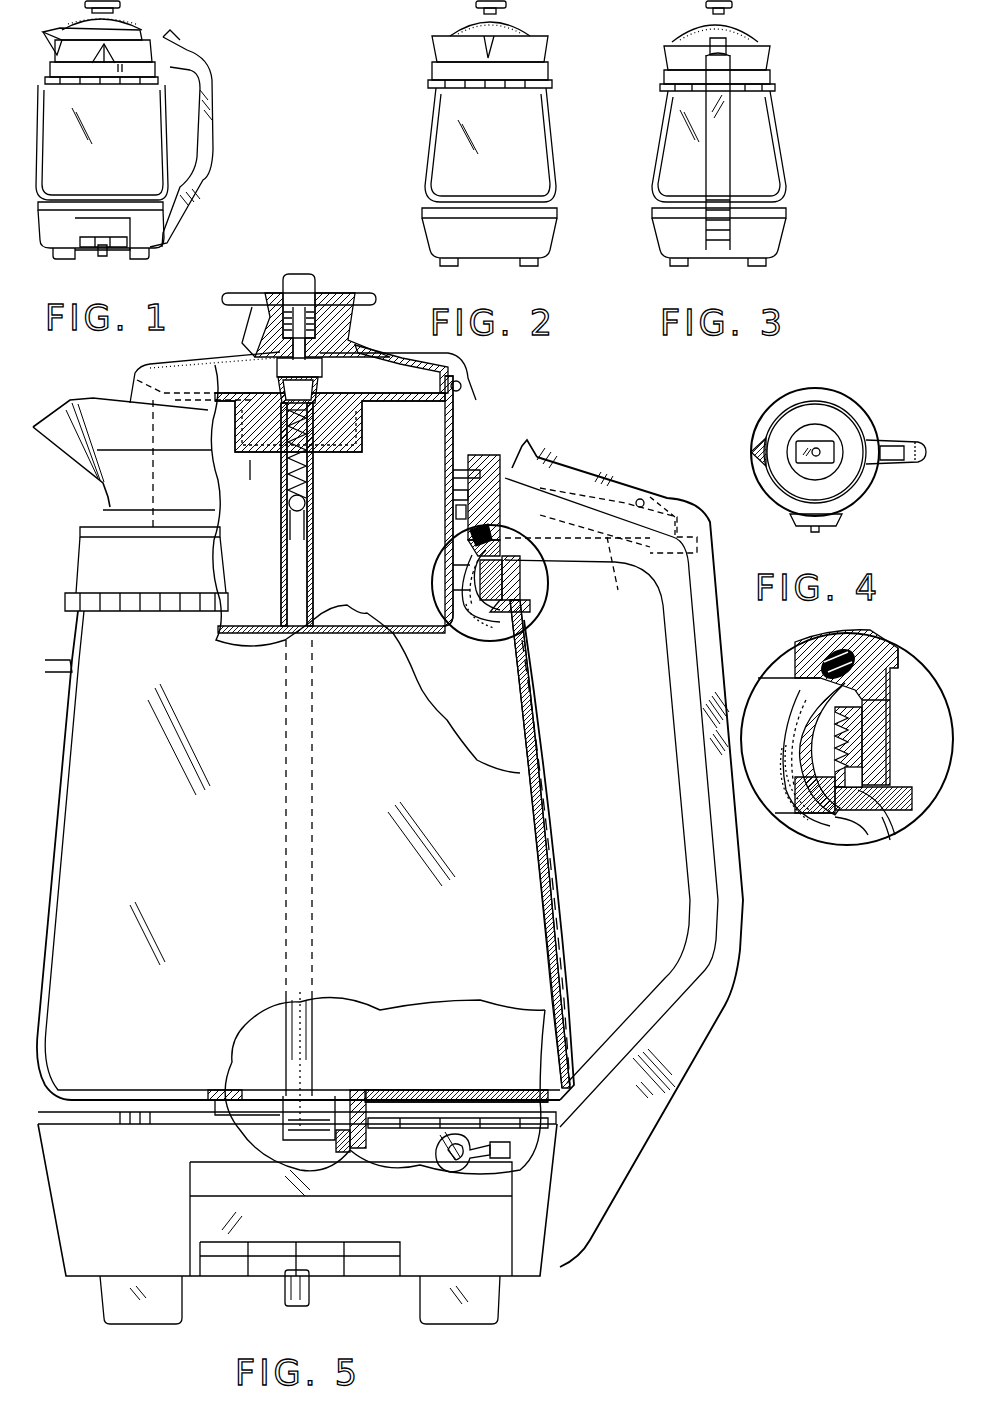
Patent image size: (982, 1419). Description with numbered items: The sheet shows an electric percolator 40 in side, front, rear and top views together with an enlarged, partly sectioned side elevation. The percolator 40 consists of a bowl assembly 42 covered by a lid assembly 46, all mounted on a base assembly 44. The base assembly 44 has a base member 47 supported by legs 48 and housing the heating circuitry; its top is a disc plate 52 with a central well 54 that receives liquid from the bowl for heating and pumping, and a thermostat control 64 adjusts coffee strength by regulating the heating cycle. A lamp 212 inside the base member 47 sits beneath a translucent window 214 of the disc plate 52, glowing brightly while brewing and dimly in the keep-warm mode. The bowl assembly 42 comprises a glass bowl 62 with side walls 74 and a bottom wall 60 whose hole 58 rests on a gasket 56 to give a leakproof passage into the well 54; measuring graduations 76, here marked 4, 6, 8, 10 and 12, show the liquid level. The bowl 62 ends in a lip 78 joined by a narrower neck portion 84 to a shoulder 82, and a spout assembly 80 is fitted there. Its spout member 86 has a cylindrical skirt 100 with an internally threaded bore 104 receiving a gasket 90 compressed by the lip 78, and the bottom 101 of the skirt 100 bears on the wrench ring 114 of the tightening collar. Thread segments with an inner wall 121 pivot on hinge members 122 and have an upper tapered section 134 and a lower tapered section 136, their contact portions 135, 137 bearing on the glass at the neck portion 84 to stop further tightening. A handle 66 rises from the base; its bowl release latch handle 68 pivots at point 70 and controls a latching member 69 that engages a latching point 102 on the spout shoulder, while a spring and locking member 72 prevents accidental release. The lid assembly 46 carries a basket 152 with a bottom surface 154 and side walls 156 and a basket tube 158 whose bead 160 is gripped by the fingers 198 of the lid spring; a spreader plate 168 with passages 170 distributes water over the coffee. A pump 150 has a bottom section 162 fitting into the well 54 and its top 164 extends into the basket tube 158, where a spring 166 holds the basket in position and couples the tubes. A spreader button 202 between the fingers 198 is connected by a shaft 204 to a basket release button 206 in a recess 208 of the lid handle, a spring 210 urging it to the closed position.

In FIG. 5, the cup graduation mark 4 is at (290, 944).
In FIG. 5, the cup graduation mark 6 is at (290, 869).
In FIG. 5, the cup graduation mark 8 is at (290, 796).
In FIG. 5, the cup graduation mark 10 is at (290, 722).
In FIG. 5, the cup graduation mark 12 is at (290, 640).
In FIG. 1, the electric percolator 40 is at (214, 58).
In FIG. 4, the electric percolator 40 is at (760, 403).
In FIG. 2, the bowl assembly 42 is at (640, 128).
In FIG. 2, the base assembly 44 is at (554, 226).
In FIG. 3, the base assembly 44 is at (787, 229).
In FIG. 2, the lid assembly 46 is at (533, 24).
In FIG. 3, the lid assembly 46 is at (760, 26).
In FIG. 4, the lid assembly 46 is at (838, 430).
In FIG. 5, the base member 47 is at (52, 1200).
In FIG. 5, the legs 48 is at (110, 1302).
In FIG. 5, the disc plate 52 is at (104, 1112).
In FIG. 5, the well 54 is at (348, 1150).
In FIG. 5, the gasket 56 is at (366, 1094).
In FIG. 5, the hole 58 is at (247, 1092).
In FIG. 5, the bottom wall 60 is at (450, 1090).
In FIG. 2, the bowl 62 is at (428, 126).
In FIG. 3, the bowl 62 is at (778, 148).
In FIG. 5, the bowl 62 is at (548, 832).
In FIG. 4, the thermostat control 64 is at (818, 528).
In FIG. 5, the thermostat control 64 is at (306, 1286).
In FIG. 4, the handle 66 is at (892, 467).
In FIG. 5, the handle 66 is at (746, 984).
In FIG. 4, the bowl release latch handle 68 is at (893, 448).
In FIG. 5, the bowl release latch handle 68 is at (572, 470).
In FIG. 5, the latching member 69 is at (505, 505).
In FIG. 5, the pivot point 70 is at (644, 498).
In FIG. 5, the spring and locking member 72 is at (618, 560).
In FIG. 5, the side walls 74 is at (524, 698).
In FIG. 5, the measuring graduations 76 is at (344, 790).
In FIG. 5, the lip 78 is at (838, 685).
In FIG. 2, the spout assembly 80 is at (427, 54).
In FIG. 3, the spout assembly 80 is at (652, 56).
In FIG. 5, the shoulder 82 is at (895, 833).
In FIG. 5, the neck portion 84 is at (790, 752).
In FIG. 5, the spout member 86 is at (118, 470).
In FIG. 5, the gasket 90 is at (830, 660).
In FIG. 5, the cylindrical skirt 100 is at (878, 738).
In FIG. 5, the bottom of cylindrical skirt 101 is at (892, 807).
In FIG. 5, the latching point 102 is at (466, 512).
In FIG. 5, the cylindrical bore 104 is at (885, 657).
In FIG. 5, the wrench ring 114 is at (855, 810).
In FIG. 5, the inner wall 121 is at (882, 723).
In FIG. 5, the hinge members 122 is at (842, 783).
In FIG. 5, the upper tapered section 134 is at (855, 690).
In FIG. 5, the contact portion 135 is at (818, 723).
In FIG. 5, the lower tapered section 136 is at (802, 817).
In FIG. 5, the contact portion 137 is at (795, 777).
In FIG. 5, the pump 150 is at (312, 1010).
In FIG. 5, the basket 152 is at (482, 445).
In FIG. 5, the bottom surface 154 is at (440, 630).
In FIG. 5, the side walls 156 is at (458, 404).
In FIG. 5, the basket tube 158 is at (282, 511).
In FIG. 5, the bead 160 is at (272, 412).
In FIG. 5, the bottom section 162 is at (322, 1096).
In FIG. 5, the top of pump tube 164 is at (304, 488).
In FIG. 5, the spring 166 is at (310, 462).
In FIG. 5, the spreader plate 168 is at (400, 396).
In FIG. 5, the passages 170 is at (418, 404).
In FIG. 5, the fingers 198 is at (322, 390).
In FIG. 5, the spreader button 202 is at (268, 340).
In FIG. 5, the shaft 204 is at (348, 339).
In FIG. 5, the basket release button 206 is at (298, 285).
In FIG. 5, the recess 208 is at (318, 300).
In FIG. 5, the spring 210 is at (284, 306).
In FIG. 5, the lamp 212 is at (458, 1172).
In FIG. 5, the translucent window 214 is at (426, 1126).